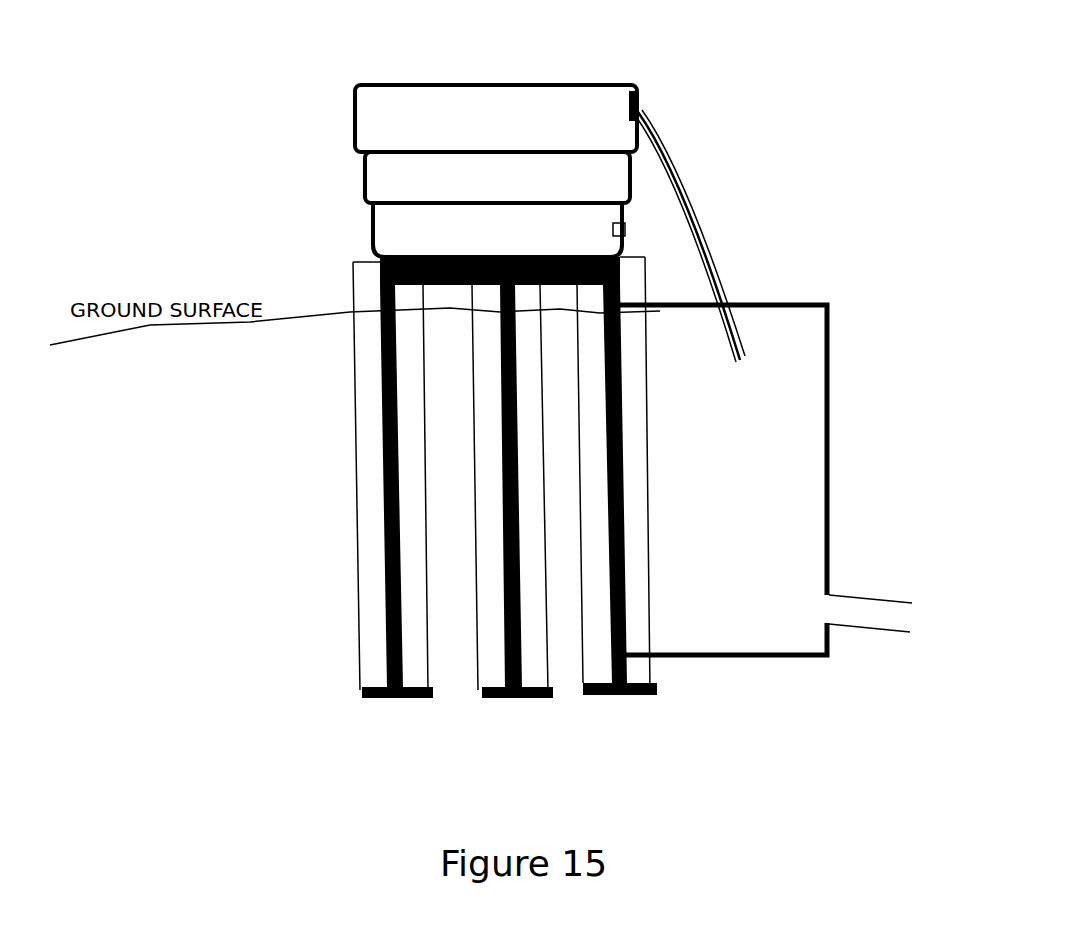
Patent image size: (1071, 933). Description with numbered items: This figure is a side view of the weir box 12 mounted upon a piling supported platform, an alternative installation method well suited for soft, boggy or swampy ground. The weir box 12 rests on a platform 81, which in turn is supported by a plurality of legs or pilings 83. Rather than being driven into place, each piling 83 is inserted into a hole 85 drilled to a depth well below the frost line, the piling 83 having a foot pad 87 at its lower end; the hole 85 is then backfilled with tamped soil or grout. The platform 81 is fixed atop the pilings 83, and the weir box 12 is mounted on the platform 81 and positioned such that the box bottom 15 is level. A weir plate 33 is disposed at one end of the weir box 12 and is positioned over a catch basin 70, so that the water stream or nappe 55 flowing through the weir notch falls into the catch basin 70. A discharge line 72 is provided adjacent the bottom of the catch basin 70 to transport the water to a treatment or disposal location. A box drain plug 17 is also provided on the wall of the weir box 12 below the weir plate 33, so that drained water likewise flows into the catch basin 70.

The weir box 12 is at (590, 112).
The weir plate 33 is at (638, 110).
The nappe 55 is at (670, 157).
The box drain plug 17 is at (627, 229).
The platform 81 is at (437, 273).
The box bottom 15 is at (388, 262).
The pilings 83 is at (505, 575).
The hole 85 is at (371, 626).
The foot pad 87 is at (368, 700).
The catch basin 70 is at (799, 388).
The discharge line 72 is at (887, 622).